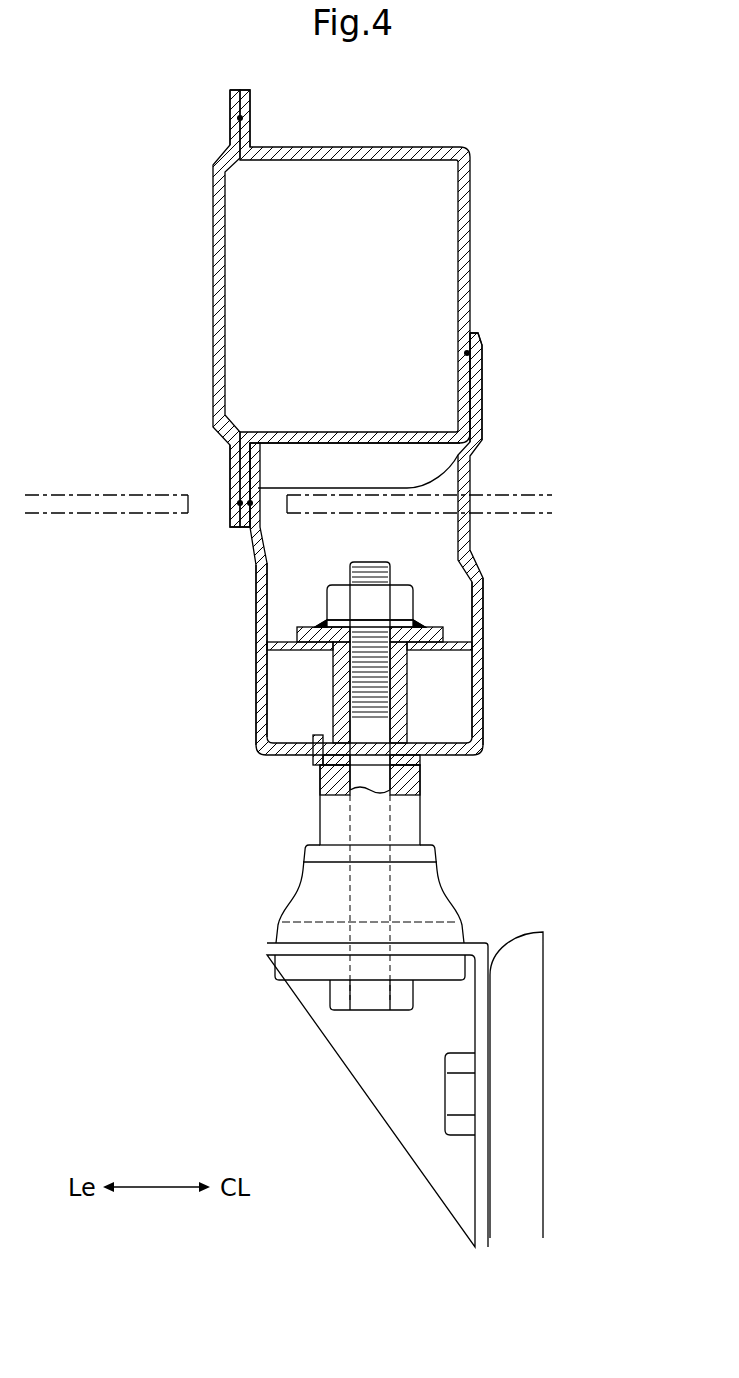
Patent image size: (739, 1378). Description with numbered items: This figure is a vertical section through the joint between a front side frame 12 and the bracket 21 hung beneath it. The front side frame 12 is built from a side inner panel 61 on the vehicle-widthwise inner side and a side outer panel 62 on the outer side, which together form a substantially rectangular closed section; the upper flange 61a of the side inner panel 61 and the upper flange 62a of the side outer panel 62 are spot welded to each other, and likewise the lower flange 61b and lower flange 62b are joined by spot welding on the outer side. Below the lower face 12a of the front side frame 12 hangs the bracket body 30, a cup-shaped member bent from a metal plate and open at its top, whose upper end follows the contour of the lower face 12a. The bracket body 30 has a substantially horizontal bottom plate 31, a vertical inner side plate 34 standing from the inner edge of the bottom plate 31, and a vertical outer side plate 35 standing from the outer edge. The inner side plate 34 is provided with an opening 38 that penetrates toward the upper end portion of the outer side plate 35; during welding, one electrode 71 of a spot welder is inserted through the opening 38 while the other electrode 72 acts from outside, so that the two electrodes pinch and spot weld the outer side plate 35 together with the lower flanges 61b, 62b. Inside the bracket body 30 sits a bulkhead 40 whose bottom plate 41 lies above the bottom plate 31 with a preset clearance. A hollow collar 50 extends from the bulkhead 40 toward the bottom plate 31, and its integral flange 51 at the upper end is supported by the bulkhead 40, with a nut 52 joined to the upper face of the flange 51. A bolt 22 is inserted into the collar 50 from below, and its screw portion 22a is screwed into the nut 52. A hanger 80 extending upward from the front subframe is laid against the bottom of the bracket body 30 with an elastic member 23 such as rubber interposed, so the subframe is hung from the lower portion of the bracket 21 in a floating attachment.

The front side frame 12 is at (340, 301).
The lower face of front side frame 12a is at (372, 438).
The side inner panel 61 is at (392, 303).
The upper flange of side inner panel 61a is at (251, 105).
The lower flange of side inner panel 61b is at (257, 463).
The side outer panel 62 is at (188, 303).
The upper flange of side outer panel 62a is at (233, 108).
The lower flange of side outer panel 62b is at (231, 478).
The electrode of spot welder 71 is at (540, 492).
The other electrode of spot welder 72 is at (115, 492).
The bracket body 30 is at (384, 544).
The inner side plate 34 is at (480, 665).
The outer side plate 35 is at (257, 565).
The opening 38 is at (471, 522).
The bulkhead 40 is at (308, 669).
The bottom plate of bulkhead 41 is at (284, 650).
The collar 50 is at (336, 690).
The flange of collar 51 is at (298, 633).
The nut 52 is at (328, 605).
The bolt 22 is at (450, 816).
The screw portion of bolt 22a is at (385, 570).
The bottom plate of bracket body 31 is at (292, 757).
The bracket 21 is at (498, 764).
The elastic member 23 is at (312, 898).
The hanger 80 is at (545, 1100).